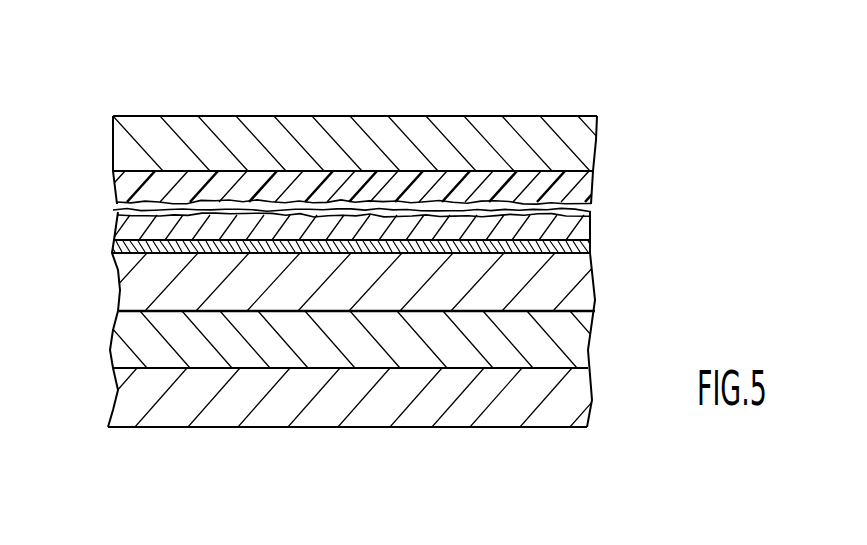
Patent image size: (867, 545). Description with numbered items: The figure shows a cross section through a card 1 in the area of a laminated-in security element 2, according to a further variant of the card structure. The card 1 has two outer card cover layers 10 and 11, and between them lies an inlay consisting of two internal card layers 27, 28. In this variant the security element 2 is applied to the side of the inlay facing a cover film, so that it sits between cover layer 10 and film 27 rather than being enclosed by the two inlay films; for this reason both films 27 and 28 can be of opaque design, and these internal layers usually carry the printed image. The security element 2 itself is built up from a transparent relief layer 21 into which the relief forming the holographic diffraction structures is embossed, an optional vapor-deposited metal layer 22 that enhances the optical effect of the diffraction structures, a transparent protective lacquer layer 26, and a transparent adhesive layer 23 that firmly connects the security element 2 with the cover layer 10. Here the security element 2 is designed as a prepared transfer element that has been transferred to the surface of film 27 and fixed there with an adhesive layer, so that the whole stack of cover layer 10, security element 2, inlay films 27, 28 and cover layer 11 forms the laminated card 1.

The card 1 is at (327, 89).
The security element 2 is at (622, 257).
The card cover layer 10 is at (127, 150).
The card cover layer 11 is at (132, 393).
The transparent relief layer 21 is at (125, 180).
The vapor-deposited metal layer 22 is at (113, 209).
The adhesive layer 23 is at (132, 270).
The transparent protective lacquer layer 26 is at (125, 227).
The internal card layer 27 is at (132, 313).
The internal card layer 28 is at (132, 338).